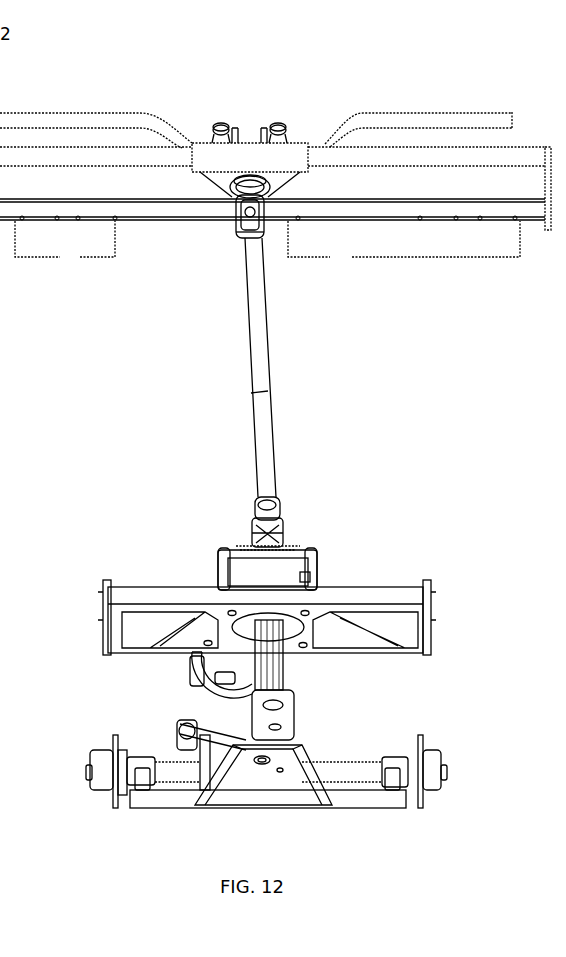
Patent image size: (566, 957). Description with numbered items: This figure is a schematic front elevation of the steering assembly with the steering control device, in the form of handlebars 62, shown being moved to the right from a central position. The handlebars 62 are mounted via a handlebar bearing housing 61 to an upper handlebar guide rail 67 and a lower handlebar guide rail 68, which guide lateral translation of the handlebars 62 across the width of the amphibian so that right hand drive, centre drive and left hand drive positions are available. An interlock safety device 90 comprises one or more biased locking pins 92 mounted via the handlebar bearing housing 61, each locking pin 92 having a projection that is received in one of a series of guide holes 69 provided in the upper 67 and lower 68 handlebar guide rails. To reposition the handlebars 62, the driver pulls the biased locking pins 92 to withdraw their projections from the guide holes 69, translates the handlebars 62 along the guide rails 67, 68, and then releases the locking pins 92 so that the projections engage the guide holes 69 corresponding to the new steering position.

The interlock safety device 90 is at (345, 78).
The biased locking pin 92 is at (217, 126).
The handlebars 62 is at (478, 123).
The handlebar bearing housing 61 is at (223, 180).
The upper handlebar guide rail 67 is at (405, 155).
The lower handlebar guide rail 68 is at (386, 208).
The guide holes 69 is at (267, 244).